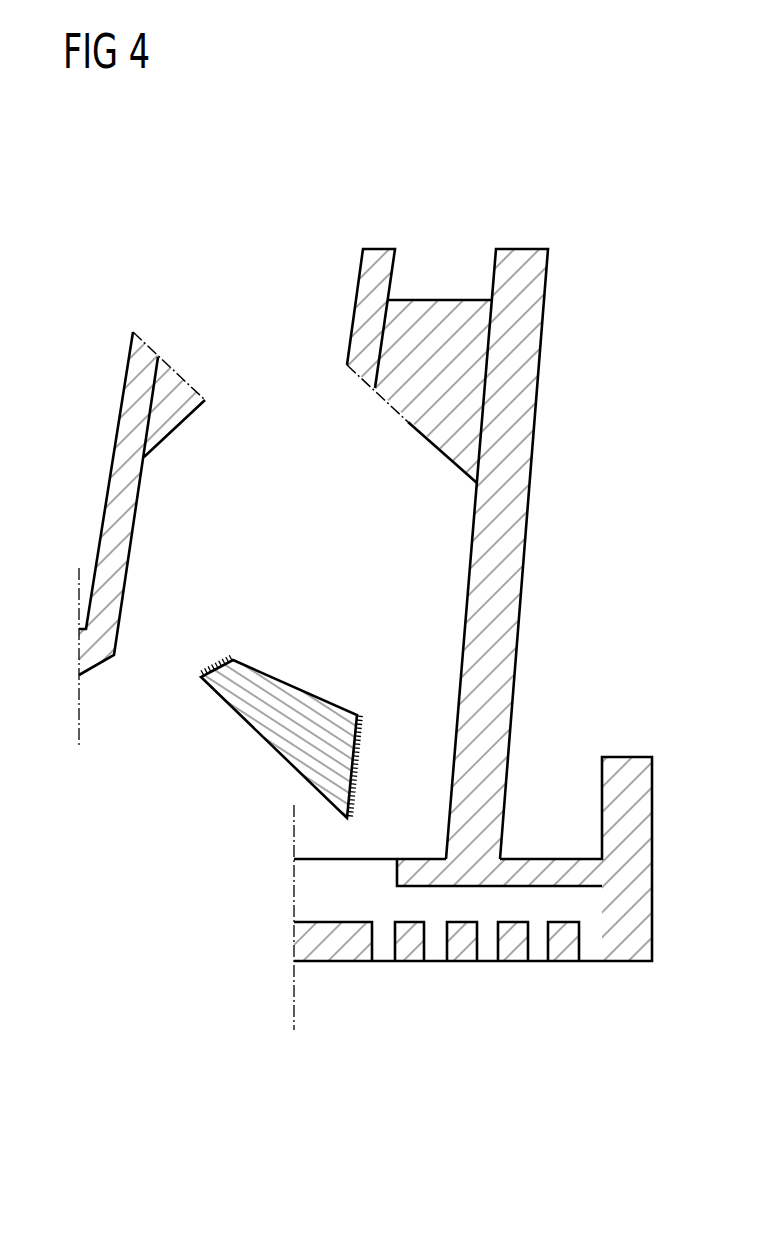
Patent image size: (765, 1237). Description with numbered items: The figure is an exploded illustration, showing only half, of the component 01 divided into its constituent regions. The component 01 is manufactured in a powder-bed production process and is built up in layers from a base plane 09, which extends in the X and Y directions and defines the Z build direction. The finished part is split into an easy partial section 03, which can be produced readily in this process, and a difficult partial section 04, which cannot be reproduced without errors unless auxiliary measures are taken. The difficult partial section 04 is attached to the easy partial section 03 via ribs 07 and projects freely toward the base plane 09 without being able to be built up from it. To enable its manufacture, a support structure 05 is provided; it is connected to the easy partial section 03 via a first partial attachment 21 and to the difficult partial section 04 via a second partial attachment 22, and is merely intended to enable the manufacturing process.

The component 01 is at (541, 181).
The easy partial section 03 is at (518, 525).
The difficult partial section 04 is at (112, 507).
The support structure 05 is at (290, 690).
The ribs 07 is at (438, 310).
The base plane 09 is at (380, 961).
The first partial attachment 21 is at (360, 758).
The second partial attachment 22 is at (215, 658).